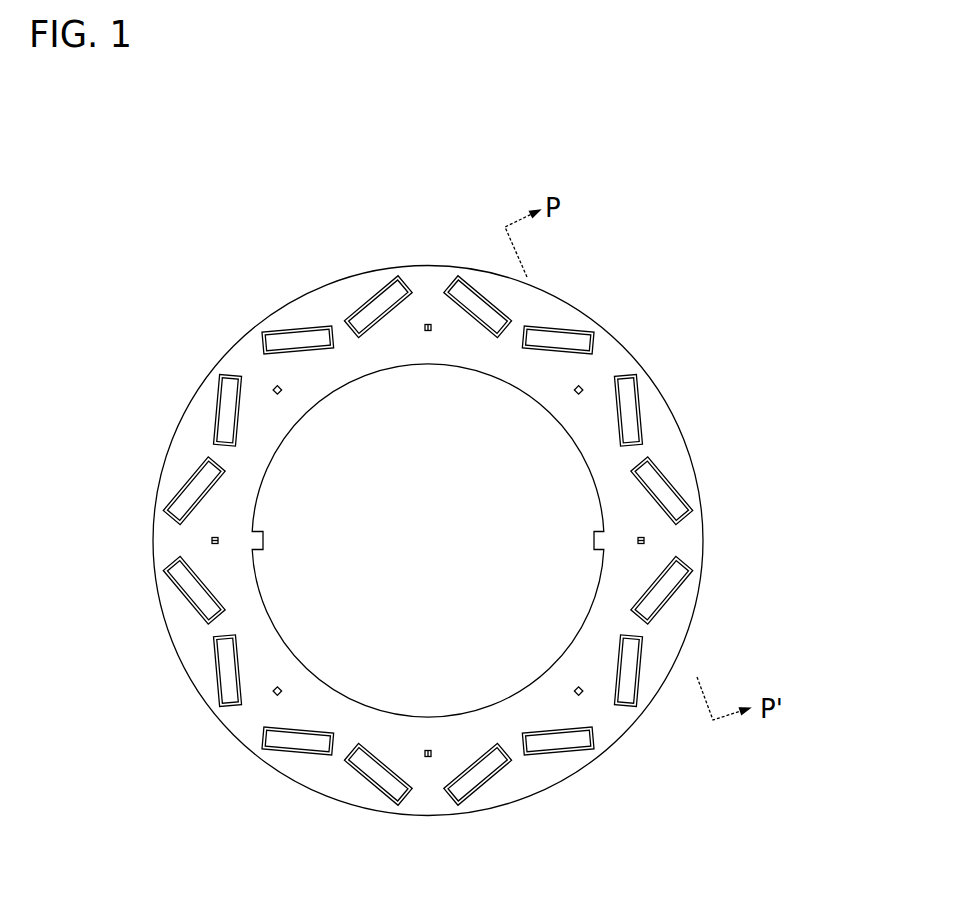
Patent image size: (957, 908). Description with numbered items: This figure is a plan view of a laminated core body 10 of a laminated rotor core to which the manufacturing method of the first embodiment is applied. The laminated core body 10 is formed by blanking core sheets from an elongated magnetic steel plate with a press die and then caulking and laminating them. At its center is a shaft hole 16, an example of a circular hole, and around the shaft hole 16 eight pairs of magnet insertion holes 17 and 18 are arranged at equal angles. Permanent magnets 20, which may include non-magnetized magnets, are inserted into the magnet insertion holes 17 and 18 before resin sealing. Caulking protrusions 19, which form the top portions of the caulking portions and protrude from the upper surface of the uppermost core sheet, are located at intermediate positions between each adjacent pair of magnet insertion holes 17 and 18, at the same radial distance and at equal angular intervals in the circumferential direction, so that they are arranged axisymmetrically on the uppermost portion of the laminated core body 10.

The laminated core body 10 is at (657, 368).
The shaft hole 16 is at (508, 693).
The magnet insertion hole 17 is at (443, 297).
The magnet insertion hole 18 is at (400, 306).
The caulking protrusion 19 is at (429, 322).
The permanent magnet 20 is at (375, 310).